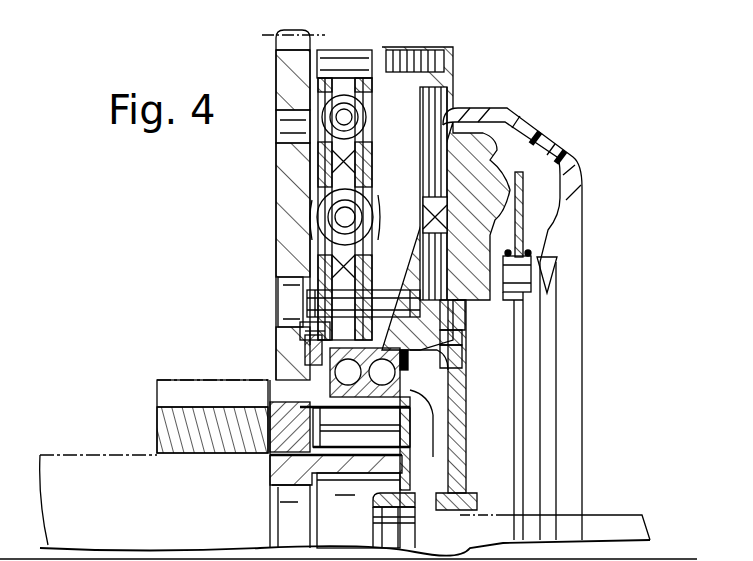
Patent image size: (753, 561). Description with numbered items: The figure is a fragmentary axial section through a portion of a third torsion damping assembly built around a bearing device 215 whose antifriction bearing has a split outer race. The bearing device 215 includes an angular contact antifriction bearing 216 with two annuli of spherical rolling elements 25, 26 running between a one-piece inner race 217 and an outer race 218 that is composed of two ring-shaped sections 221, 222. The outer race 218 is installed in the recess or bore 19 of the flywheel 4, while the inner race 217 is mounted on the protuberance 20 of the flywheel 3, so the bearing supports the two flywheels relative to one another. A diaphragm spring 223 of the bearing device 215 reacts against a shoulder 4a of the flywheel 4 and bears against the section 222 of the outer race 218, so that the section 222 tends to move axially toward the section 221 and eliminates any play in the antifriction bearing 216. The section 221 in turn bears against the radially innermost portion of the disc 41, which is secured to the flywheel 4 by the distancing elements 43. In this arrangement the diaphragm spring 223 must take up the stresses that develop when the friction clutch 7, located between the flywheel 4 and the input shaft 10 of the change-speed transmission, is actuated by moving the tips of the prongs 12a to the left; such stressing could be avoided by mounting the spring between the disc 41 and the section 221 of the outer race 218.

The flywheel 3 is at (285, 252).
The flywheel 4 is at (413, 163).
The shoulder 4a is at (447, 393).
The friction clutch 7 is at (542, 116).
The input shaft 10 is at (625, 523).
The prongs 12a is at (517, 460).
The recess or bore 19 is at (305, 332).
The protuberance 20 is at (400, 378).
The spherical rolling elements 25 is at (330, 377).
The spherical rolling elements 26 is at (330, 470).
The disc 41 is at (287, 253).
The distancing elements 43 is at (300, 287).
The bearing device 215 is at (408, 425).
The angular contact antifriction bearing 216 is at (310, 385).
The inner race 217 is at (415, 410).
The outer race 218 is at (497, 335).
The section 221 is at (440, 330).
The section 222 is at (445, 344).
The diaphragm spring 223 is at (447, 366).